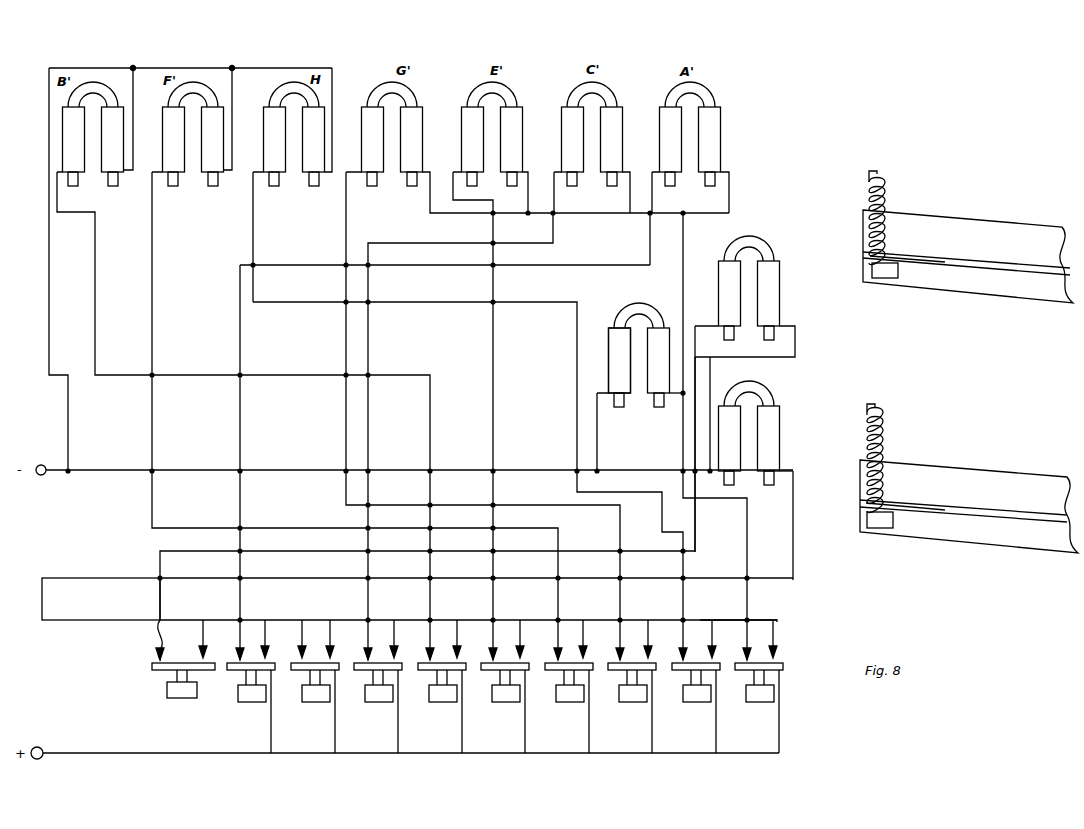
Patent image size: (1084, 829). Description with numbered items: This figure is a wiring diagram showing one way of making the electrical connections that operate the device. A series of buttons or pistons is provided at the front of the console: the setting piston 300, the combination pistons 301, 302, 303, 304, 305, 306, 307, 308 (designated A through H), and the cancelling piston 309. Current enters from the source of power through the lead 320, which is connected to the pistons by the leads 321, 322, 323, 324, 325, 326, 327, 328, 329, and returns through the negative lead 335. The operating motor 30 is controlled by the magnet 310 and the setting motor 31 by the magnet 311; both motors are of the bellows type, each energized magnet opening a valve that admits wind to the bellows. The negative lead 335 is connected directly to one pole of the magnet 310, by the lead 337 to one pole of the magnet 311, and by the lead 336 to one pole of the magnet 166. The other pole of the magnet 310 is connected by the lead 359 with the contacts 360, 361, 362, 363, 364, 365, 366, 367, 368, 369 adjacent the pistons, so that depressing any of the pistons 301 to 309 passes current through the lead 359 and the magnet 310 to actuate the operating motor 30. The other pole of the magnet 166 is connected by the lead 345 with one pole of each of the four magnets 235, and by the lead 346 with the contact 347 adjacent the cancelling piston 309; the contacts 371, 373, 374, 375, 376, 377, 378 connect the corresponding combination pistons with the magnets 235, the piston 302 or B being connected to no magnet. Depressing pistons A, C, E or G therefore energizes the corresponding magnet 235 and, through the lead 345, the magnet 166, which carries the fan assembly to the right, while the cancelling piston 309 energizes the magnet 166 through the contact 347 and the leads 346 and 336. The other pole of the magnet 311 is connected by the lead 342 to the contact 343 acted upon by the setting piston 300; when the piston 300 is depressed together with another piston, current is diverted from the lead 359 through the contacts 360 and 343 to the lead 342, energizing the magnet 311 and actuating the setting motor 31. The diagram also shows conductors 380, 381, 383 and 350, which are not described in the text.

The magnet 235 is at (68, 140).
The conductor 380 is at (297, 69).
The conductor 381 is at (128, 105).
The conductor 383 is at (333, 98).
The magnet 311 is at (774, 268).
The magnet 310 is at (772, 432).
The lead 345 is at (672, 308).
The magnet 166 is at (612, 336).
The lead 342 is at (708, 365).
The lead 337 is at (713, 392).
The conductor 350 is at (797, 528).
The lead 336 is at (600, 449).
The lead 346 is at (683, 440).
The negative lead 335 is at (414, 477).
The lead 359 is at (98, 616).
The contact 343 is at (152, 665).
The setting piston 300 is at (177, 689).
The combination piston 301 is at (250, 694).
The combination piston 302 is at (314, 694).
The combination piston 303 is at (375, 694).
The combination piston 304 is at (438, 694).
The combination piston 305 is at (501, 694).
The combination piston 306 is at (566, 694).
The combination piston 307 is at (629, 694).
The combination piston 308 is at (693, 694).
The cancelling piston 309 is at (756, 694).
The contact 371 is at (231, 672).
The contact 373 is at (368, 677).
The contact 374 is at (432, 677).
The contact 375 is at (495, 677).
The contact 376 is at (559, 677).
The contact 377 is at (622, 677).
The contact 378 is at (686, 677).
The contact 360 is at (210, 652).
The contact 361 is at (273, 654).
The contact 362 is at (337, 654).
The contact 363 is at (401, 654).
The contact 364 is at (464, 654).
The contact 365 is at (528, 654).
The contact 366 is at (590, 654).
The contact 367 is at (655, 654).
The contact 368 is at (719, 654).
The contact 369 is at (777, 650).
The contact 347 is at (760, 640).
The lead 320 is at (405, 761).
The lead 321 is at (268, 743).
The lead 322 is at (312, 711).
The lead 323 is at (375, 711).
The lead 324 is at (440, 711).
The lead 325 is at (503, 711).
The lead 326 is at (567, 711).
The lead 327 is at (631, 711).
The lead 328 is at (694, 711).
The lead 329 is at (758, 711).
The operating motor 30 is at (968, 237).
The setting motor 31 is at (969, 478).